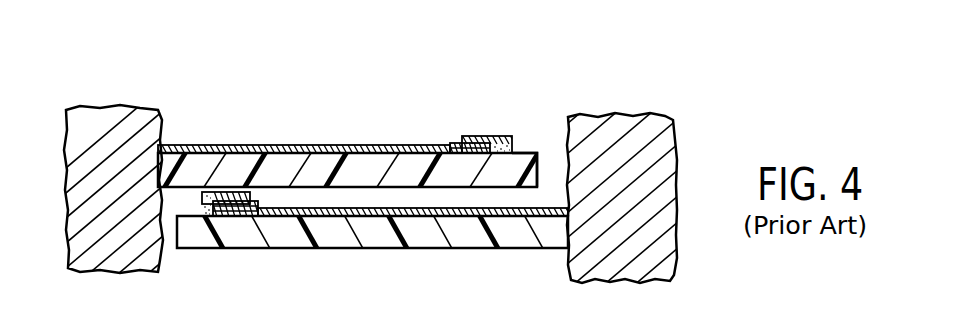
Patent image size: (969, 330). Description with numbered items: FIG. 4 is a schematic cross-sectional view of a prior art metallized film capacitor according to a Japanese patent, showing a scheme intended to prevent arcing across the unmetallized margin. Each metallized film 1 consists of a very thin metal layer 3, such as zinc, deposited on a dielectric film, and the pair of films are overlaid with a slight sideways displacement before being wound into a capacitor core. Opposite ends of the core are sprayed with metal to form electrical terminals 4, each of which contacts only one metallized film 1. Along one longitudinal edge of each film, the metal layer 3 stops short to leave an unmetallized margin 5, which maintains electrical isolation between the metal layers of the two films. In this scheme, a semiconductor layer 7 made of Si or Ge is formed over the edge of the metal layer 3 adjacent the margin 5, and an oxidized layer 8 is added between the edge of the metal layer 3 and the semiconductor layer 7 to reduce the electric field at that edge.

The metallized film 1 is at (250, 165).
The metal layer 3 is at (313, 146).
The electrical terminal 4 is at (105, 107).
The unmetallized margin 5 is at (530, 153).
The semiconductor layer 7 is at (500, 136).
The oxidized layer 8 is at (458, 141).